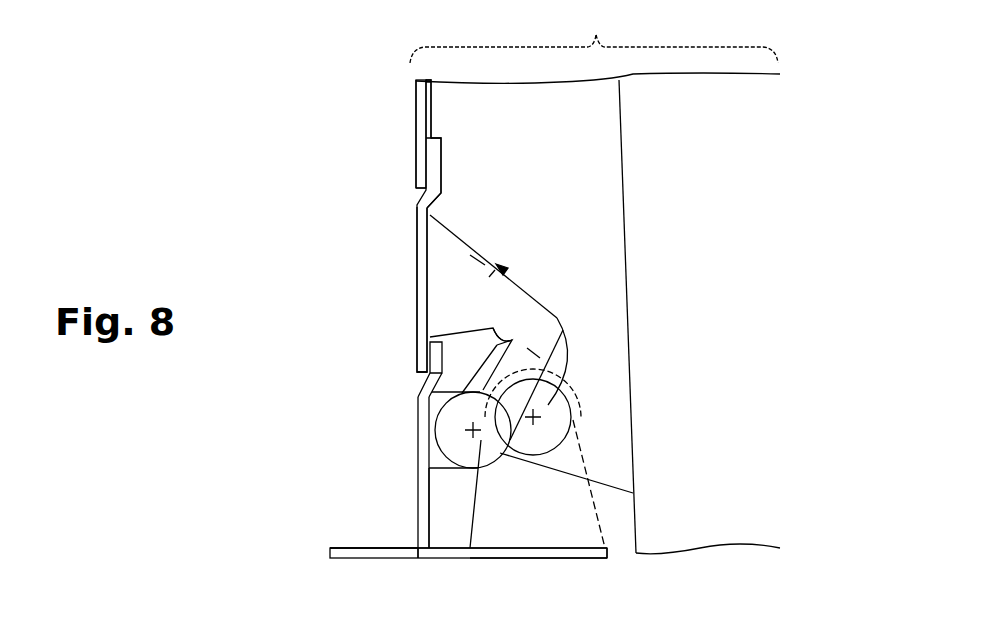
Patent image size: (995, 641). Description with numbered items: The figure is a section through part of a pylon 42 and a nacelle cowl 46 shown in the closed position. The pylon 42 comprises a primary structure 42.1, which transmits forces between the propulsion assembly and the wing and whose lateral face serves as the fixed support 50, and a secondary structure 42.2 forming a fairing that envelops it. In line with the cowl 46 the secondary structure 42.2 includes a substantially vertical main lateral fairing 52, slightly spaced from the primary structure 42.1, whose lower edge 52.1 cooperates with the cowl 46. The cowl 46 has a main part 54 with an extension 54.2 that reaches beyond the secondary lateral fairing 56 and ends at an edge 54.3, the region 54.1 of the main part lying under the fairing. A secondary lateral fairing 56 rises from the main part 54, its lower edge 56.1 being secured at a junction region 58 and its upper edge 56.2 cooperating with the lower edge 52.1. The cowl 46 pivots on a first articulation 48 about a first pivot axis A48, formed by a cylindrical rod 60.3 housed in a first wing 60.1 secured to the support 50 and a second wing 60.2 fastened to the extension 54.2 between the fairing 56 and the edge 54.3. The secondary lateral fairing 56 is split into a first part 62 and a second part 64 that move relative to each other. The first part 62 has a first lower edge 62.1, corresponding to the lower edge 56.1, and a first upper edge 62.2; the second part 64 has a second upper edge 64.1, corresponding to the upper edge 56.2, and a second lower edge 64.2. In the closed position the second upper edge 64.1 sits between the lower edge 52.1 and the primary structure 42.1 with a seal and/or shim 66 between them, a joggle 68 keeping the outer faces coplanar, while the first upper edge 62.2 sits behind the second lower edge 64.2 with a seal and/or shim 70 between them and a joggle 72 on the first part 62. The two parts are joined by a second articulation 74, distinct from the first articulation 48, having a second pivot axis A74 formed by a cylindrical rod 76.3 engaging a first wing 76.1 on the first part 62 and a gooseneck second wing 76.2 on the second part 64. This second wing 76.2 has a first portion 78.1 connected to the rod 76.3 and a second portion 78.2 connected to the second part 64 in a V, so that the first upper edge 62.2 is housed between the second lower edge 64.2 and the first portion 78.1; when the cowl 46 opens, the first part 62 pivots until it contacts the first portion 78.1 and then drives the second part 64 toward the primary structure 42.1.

The pylon 42 is at (595, 45).
The primary structure 42.1 is at (618, 153).
The secondary structure 42.2 is at (415, 103).
The cowl 46 is at (340, 548).
The first articulation 48 is at (553, 398).
The first pivot axis A48 is at (535, 418).
The fixed support 50 is at (637, 523).
The main lateral fairing 52 is at (416, 138).
The lower edge of the main lateral fairing 52.1 is at (418, 191).
The main part of the cowl 54 is at (345, 560).
The base plate left portion 54.1 is at (407, 557).
The extension 54.2 is at (530, 560).
The edge of the extension 54.3 is at (608, 557).
The secondary lateral fairing 56 is at (385, 268).
The lower edge of the secondary lateral fairing 56.1 is at (430, 472).
The upper edge of the secondary lateral fairing 56.2 is at (430, 138).
The junction region 58 is at (425, 560).
The first wing 60.1 is at (612, 463).
The second wing 60.2 is at (482, 540).
The cylindrical rod 60.3 is at (572, 434).
The first part 62 is at (415, 433).
The first lower edge 62.1 is at (420, 540).
The first upper edge 62.2 is at (430, 350).
The second part 64 is at (417, 252).
The second upper edge 64.1 is at (441, 145).
The second lower edge 64.2 is at (430, 364).
The seal and/or shim 66 is at (432, 137).
The joggle 68 is at (436, 203).
The seal and/or shim 70 is at (508, 340).
The joggle 72 is at (527, 340).
The second articulation 74 is at (462, 456).
The second pivot axis A74 is at (473, 432).
The first wing 76.1 is at (445, 440).
The second wing 76.2 is at (497, 332).
The cylindrical rod 76.3 is at (505, 332).
The first portion 78.1 is at (533, 353).
The second portion 78.2 is at (477, 260).